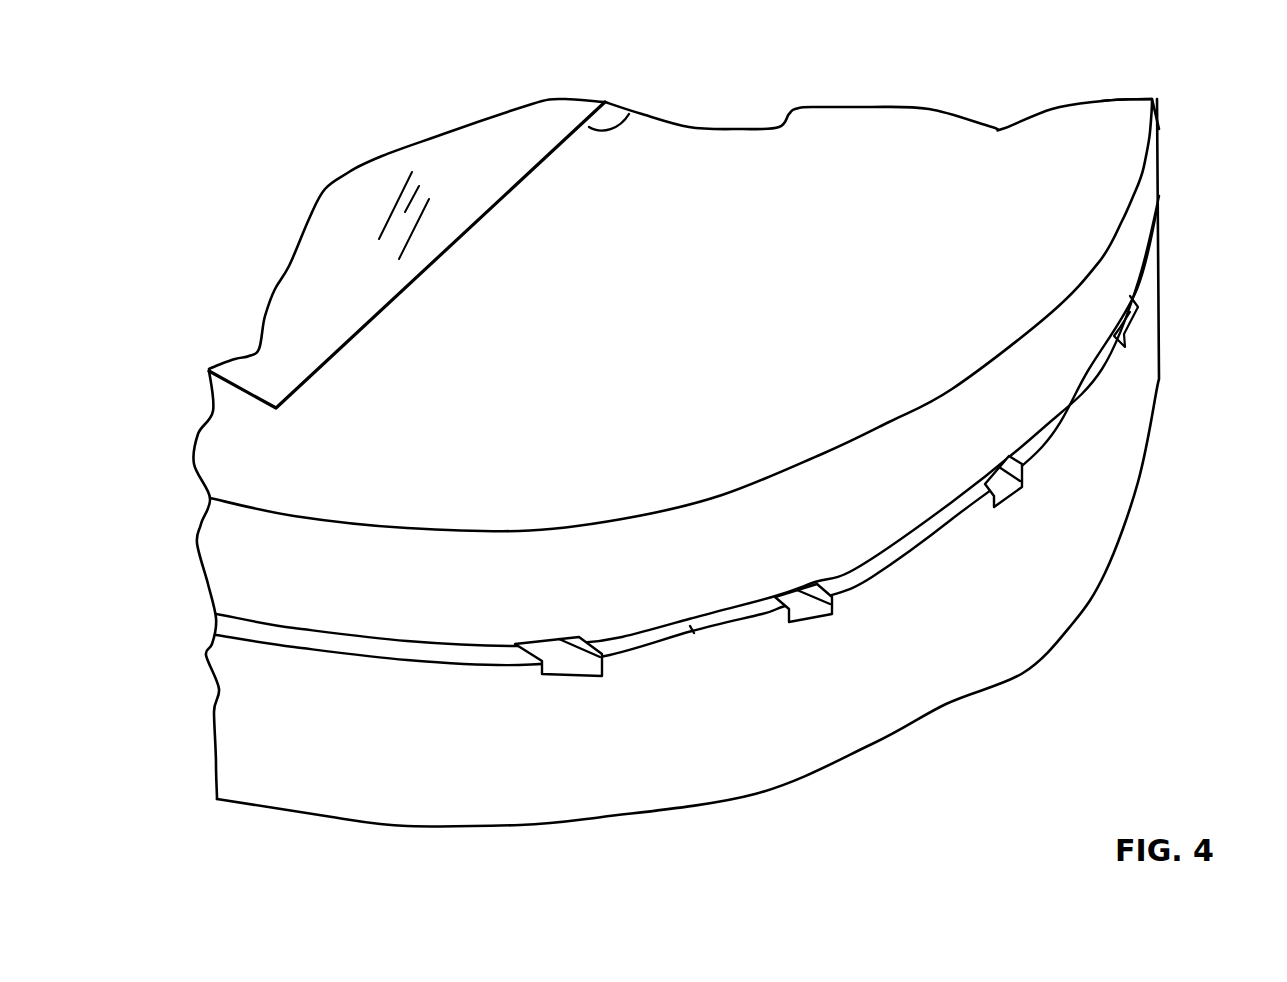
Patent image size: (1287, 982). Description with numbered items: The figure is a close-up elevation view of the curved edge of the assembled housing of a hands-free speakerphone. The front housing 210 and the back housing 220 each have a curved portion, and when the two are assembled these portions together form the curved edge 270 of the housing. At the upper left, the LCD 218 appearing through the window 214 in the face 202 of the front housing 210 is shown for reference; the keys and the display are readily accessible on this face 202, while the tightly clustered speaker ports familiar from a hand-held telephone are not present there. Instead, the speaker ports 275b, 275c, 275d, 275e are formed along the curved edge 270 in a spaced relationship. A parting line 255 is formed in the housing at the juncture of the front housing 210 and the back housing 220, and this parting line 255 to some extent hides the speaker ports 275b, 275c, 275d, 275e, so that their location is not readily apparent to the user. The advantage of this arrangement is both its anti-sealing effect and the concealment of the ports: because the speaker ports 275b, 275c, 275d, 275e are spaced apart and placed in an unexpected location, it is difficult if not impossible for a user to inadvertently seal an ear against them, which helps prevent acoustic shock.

The face 202 is at (809, 123).
The front housing 210 is at (1151, 124).
The window 214 is at (621, 106).
The LCD 218 is at (567, 103).
The back housing 220 is at (1152, 259).
The parting line 255 is at (684, 621).
The curved edge 270 is at (1158, 629).
The speaker port 275b is at (1122, 296).
The speaker port 275c is at (1014, 479).
The speaker port 275d is at (824, 601).
The speaker port 275e is at (594, 663).